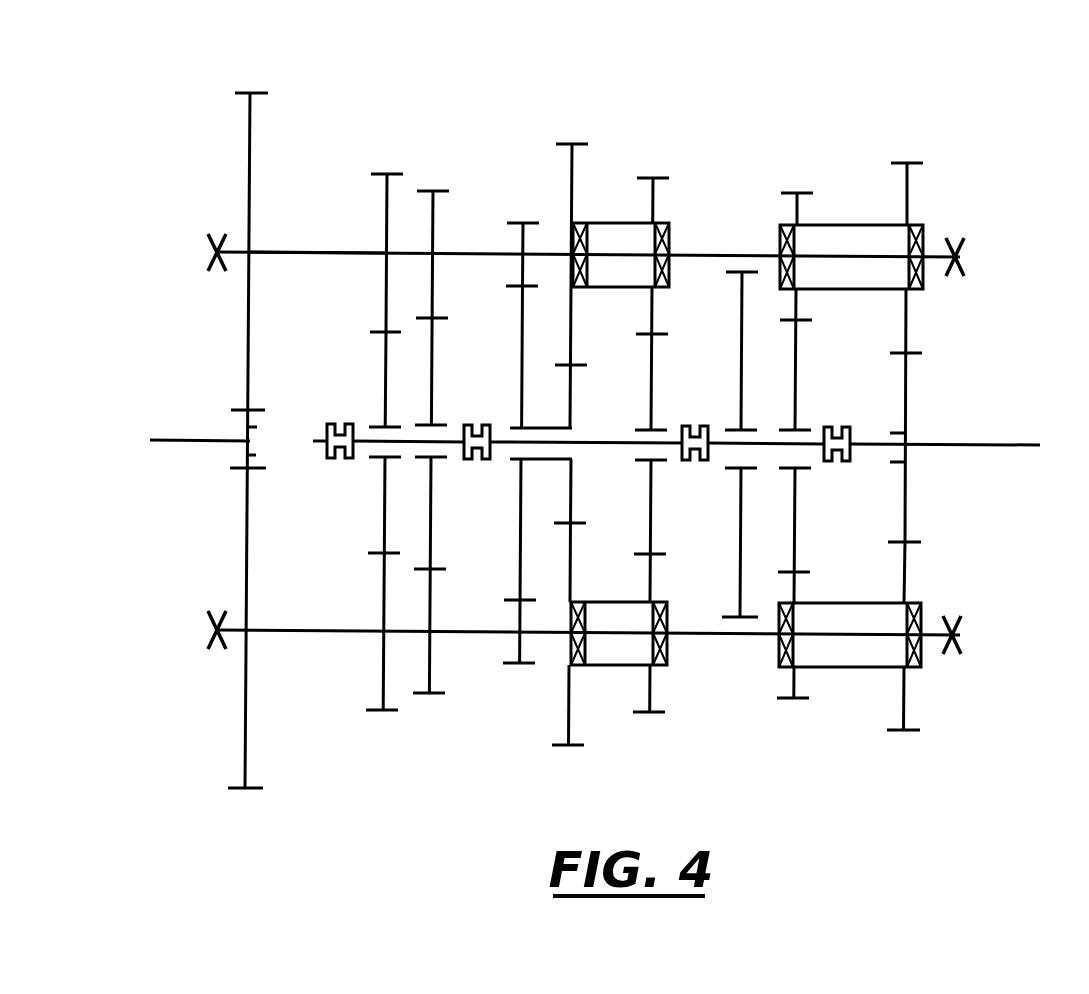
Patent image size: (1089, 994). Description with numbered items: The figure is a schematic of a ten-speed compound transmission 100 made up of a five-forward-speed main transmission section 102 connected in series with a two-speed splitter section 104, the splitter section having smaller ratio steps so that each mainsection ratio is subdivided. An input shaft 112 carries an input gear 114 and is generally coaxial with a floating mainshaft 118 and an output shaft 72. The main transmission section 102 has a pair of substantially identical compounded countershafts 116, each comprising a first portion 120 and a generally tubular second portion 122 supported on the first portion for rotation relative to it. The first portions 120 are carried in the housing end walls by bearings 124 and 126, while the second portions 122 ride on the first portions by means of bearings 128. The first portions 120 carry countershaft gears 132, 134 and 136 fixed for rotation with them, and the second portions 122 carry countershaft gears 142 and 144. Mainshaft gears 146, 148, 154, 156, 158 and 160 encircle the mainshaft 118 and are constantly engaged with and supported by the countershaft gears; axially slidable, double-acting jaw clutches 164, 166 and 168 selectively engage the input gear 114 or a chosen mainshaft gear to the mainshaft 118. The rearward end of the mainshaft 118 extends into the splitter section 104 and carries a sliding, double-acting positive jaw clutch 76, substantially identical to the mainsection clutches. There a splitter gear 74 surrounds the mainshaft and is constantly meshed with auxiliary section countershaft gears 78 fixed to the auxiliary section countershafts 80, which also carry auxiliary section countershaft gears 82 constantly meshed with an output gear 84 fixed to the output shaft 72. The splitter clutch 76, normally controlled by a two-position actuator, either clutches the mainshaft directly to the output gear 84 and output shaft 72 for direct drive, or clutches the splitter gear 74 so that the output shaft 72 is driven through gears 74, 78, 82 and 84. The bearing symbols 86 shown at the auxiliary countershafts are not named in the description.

The output shaft 72 is at (1007, 448).
The splitter gear 74 is at (797, 408).
The sliding double-acting positive jaw clutch 76 is at (843, 472).
The auxiliary section countershaft gears 78 is at (795, 208).
The auxiliary section countershafts 80 is at (860, 215).
The auxiliary section countershaft gears 82 is at (906, 204).
The output gear 84 is at (908, 415).
The bearings 86 is at (887, 653).
The transmission 100 is at (990, 163).
The main transmission section 102 is at (487, 794).
The splitter section 104 is at (878, 804).
The input shaft 112 is at (190, 438).
The input gear 114 is at (240, 402).
The compounded countershafts 116 is at (340, 243).
The floating mainshaft 118 is at (610, 442).
The first portion 120 is at (323, 255).
The second portion 122 is at (640, 292).
The bearing 124 is at (198, 258).
The bearing 126 is at (975, 258).
The bearings 128 is at (653, 238).
The countershaft gear 132 is at (383, 277).
The countershaft gear 134 is at (430, 665).
The countershaft gear 136 is at (518, 238).
The countershaft gear 142 is at (570, 578).
The countershaft gear 144 is at (653, 200).
The mainshaft gear 146 is at (383, 356).
The mainshaft gear 148 is at (435, 347).
The mainshaft gear 154 is at (518, 565).
The mainshaft gear 156 is at (572, 505).
The mainshaft gear 158 is at (653, 393).
The mainshaft gear 160 is at (735, 548).
The double-acting jaw clutch 164 is at (338, 466).
The double-acting jaw clutch 166 is at (471, 416).
The double-acting jaw clutch 168 is at (688, 470).